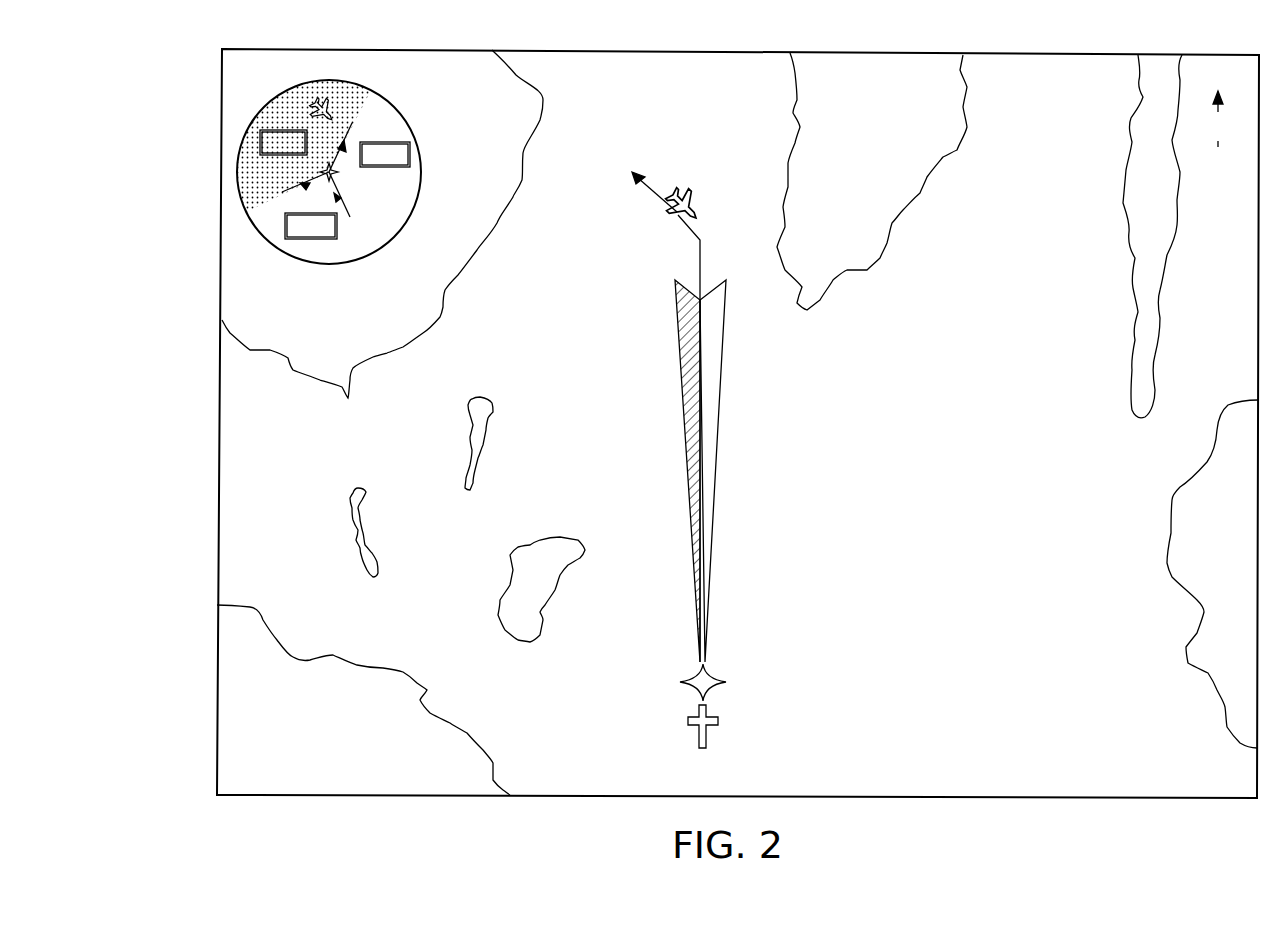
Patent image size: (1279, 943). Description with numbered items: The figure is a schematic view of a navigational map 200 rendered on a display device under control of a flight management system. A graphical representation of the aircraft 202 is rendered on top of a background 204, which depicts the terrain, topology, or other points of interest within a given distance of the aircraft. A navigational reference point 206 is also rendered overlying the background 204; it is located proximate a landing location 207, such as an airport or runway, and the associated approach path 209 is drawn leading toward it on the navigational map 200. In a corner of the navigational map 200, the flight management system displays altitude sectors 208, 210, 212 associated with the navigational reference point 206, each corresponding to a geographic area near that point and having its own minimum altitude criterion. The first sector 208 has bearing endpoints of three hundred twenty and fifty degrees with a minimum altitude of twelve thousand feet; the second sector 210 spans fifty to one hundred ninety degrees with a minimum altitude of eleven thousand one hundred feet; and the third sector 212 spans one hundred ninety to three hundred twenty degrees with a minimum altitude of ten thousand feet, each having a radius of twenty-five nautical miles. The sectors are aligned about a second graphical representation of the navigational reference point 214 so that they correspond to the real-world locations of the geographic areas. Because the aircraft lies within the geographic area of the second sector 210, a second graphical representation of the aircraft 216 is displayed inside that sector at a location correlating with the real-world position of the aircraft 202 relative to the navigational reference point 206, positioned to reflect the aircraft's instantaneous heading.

The navigational map 200 is at (543, 54).
The graphical representation of the aircraft 202 is at (688, 210).
The background 204 is at (367, 641).
The navigational reference point 206 is at (691, 677).
The landing location 207 is at (695, 735).
The first sector 208 is at (310, 260).
The approach path 209 is at (744, 441).
The second sector 210 is at (248, 165).
The third sector 212 is at (415, 174).
The second graphical representation of navigational reference point 214 is at (336, 176).
The second graphical representation of the aircraft 216 is at (314, 102).